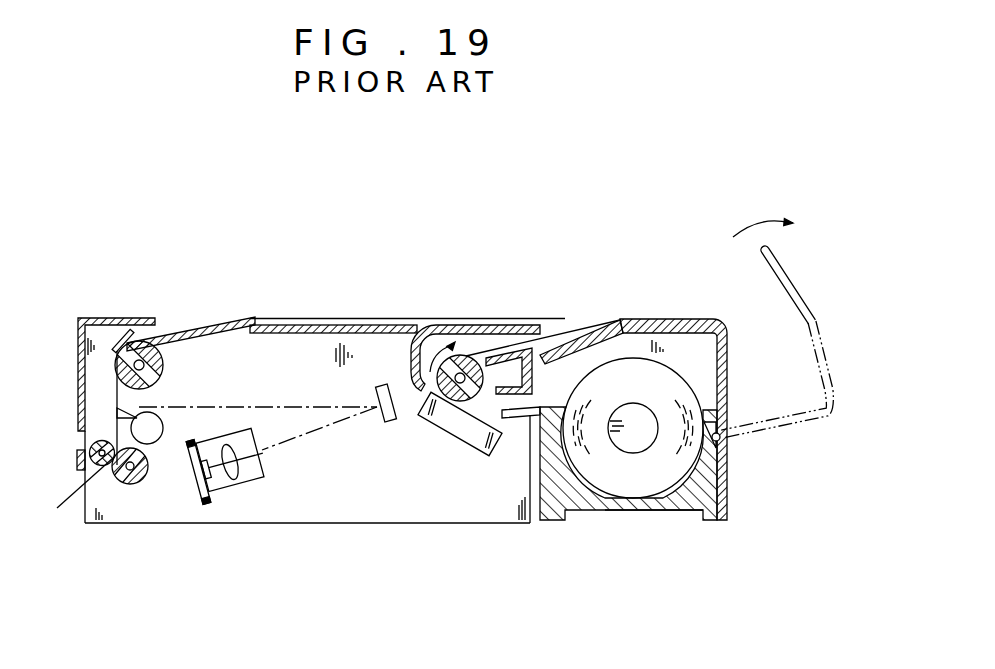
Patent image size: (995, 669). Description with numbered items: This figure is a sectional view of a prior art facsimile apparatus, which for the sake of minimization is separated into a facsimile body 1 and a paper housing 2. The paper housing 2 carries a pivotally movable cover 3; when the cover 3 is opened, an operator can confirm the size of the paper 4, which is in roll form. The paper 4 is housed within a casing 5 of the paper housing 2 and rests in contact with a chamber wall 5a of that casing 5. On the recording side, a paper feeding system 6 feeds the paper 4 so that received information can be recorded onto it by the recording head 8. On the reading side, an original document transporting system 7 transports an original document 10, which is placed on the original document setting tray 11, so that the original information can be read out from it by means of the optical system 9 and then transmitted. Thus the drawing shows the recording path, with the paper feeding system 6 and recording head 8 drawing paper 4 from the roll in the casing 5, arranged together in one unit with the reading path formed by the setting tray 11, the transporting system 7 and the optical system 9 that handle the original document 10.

The facsimile body 1 is at (289, 314).
The paper housing 2 is at (662, 314).
The cover 3 is at (593, 337).
The paper 4 is at (672, 377).
The casing 5 is at (723, 470).
The chamber wall 5a is at (663, 503).
The paper feeding system 6 is at (447, 317).
The original document transporting system 7 is at (163, 332).
The recording head 8 is at (468, 440).
The optical system 9 is at (311, 448).
The original document 10 is at (342, 320).
The original document setting tray 11 is at (248, 320).